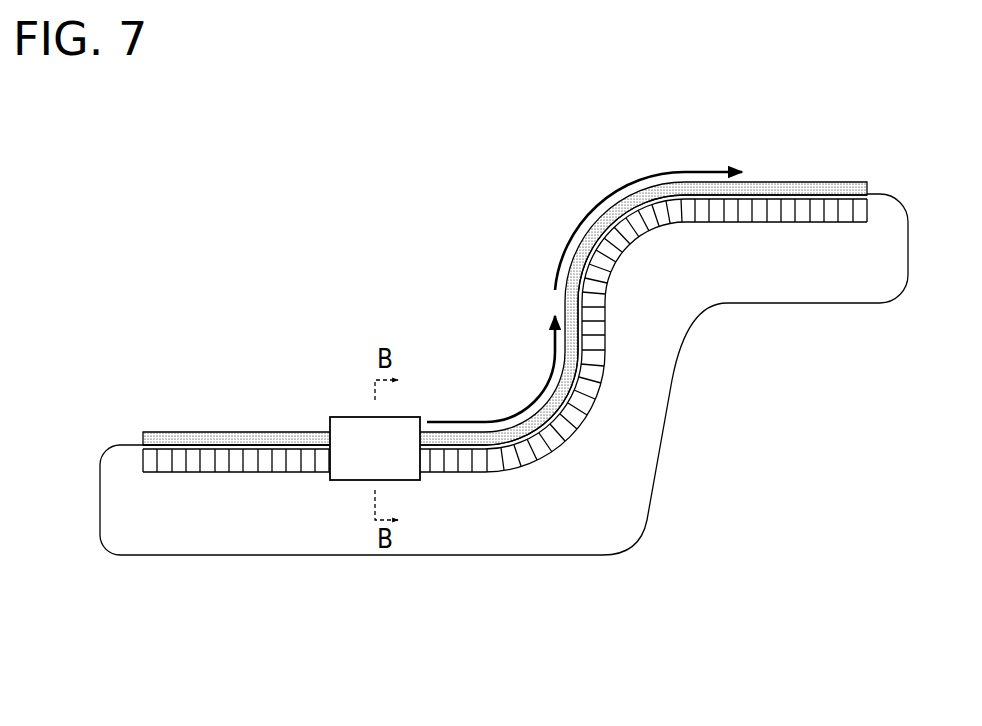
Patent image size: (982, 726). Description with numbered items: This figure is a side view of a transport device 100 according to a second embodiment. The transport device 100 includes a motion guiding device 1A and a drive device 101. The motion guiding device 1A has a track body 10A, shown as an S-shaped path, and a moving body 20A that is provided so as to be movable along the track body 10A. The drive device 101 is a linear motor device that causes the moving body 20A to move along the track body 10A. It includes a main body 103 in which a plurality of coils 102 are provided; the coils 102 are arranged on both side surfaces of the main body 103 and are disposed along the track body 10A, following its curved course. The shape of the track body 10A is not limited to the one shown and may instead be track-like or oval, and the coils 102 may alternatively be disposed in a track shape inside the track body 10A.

The transport device 100 is at (482, 372).
The drive device 101 is at (97, 484).
The coils 102 is at (295, 473).
The main body 103 is at (287, 441).
The motion guiding device 1A is at (505, 331).
The track body 10A is at (250, 431).
The moving body 20A is at (358, 416).